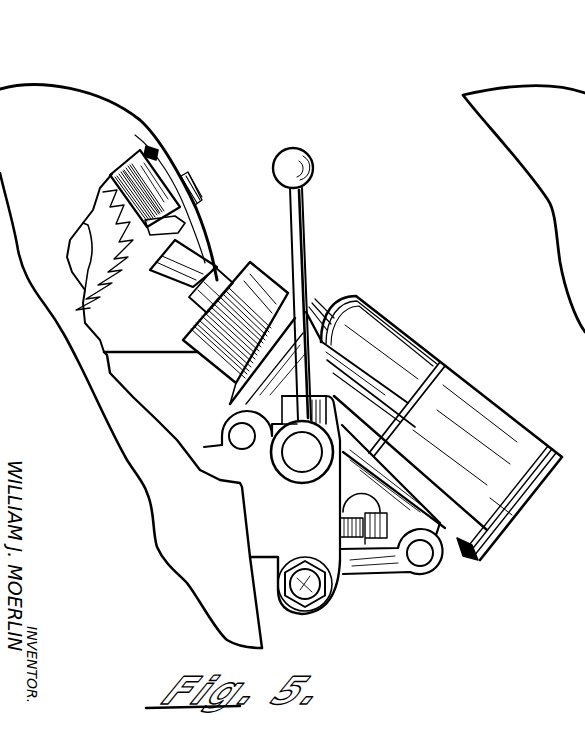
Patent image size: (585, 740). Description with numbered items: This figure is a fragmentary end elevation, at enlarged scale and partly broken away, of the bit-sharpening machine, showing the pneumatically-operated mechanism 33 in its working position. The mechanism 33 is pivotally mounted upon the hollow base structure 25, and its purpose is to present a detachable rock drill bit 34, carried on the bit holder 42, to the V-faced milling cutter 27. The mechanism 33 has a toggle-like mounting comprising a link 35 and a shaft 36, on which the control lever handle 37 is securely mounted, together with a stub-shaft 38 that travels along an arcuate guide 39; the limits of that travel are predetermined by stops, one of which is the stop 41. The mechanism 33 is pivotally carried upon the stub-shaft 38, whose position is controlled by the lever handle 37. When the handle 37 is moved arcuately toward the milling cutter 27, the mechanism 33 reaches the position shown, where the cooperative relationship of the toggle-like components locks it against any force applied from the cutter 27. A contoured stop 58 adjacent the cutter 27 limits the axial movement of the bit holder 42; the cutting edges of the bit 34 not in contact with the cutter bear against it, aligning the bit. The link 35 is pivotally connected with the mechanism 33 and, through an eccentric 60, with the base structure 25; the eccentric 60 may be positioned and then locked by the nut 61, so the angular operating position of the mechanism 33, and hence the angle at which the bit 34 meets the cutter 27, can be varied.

The hollow base structure 25 is at (131, 410).
The V-faced milling cutter 27 is at (85, 293).
The pneumatically-operated mechanism 33 is at (503, 527).
The rock drill bit 34 is at (176, 265).
The link 35 is at (385, 578).
The shaft 36 is at (303, 472).
The control lever handle 37 is at (305, 232).
The stub-shaft 38 is at (241, 441).
The arcuate guide 39 is at (285, 420).
The stop 41 is at (248, 447).
The bit holder 42 is at (222, 303).
The stop 58 is at (180, 215).
The eccentric 60 is at (324, 610).
The nut 61 is at (304, 606).